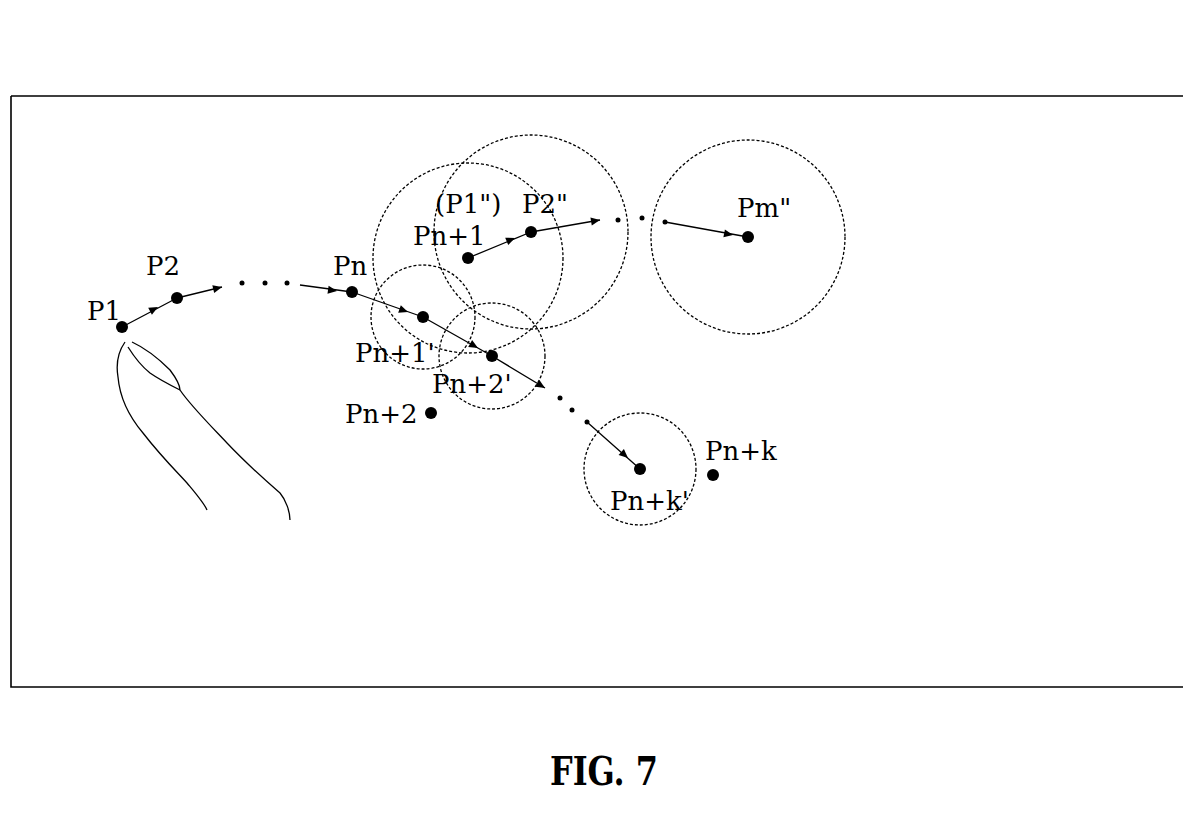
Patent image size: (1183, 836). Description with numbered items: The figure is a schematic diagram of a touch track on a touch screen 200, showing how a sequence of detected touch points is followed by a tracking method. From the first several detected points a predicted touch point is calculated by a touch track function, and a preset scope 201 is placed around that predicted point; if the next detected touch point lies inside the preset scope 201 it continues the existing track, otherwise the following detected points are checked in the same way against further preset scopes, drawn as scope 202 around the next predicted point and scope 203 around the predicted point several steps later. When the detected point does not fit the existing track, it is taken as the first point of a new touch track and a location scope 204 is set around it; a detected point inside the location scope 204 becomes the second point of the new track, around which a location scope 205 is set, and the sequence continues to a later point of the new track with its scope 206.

The touch screen 200 is at (127, 140).
The preset scope 201 is at (372, 327).
The second region around point Pn+2' 202 is at (542, 357).
The third region around point Pn+k' 203 is at (587, 482).
The location scope 204 is at (410, 205).
The location scope 205 is at (585, 175).
The region around point Pm'' 206 is at (805, 180).